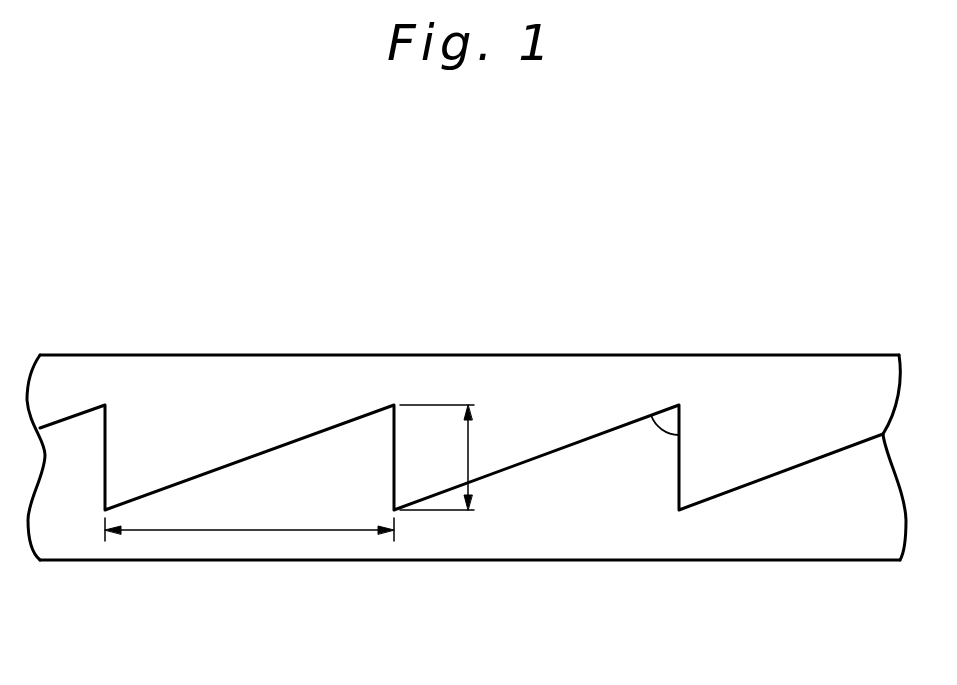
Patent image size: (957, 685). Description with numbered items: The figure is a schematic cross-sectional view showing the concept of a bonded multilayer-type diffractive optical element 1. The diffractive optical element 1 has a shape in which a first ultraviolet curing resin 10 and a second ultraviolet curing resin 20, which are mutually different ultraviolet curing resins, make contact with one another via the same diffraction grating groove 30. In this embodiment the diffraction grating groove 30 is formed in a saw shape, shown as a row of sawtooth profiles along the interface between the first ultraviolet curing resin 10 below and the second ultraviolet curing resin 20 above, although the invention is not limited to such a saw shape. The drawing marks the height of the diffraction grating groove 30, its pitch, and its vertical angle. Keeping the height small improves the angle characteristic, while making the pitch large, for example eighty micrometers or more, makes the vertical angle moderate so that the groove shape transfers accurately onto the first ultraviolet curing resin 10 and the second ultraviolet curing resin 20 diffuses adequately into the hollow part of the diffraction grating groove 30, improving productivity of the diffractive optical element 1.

The diffractive optical element 1 is at (466, 393).
The first ultraviolet curing resin 10 is at (610, 552).
The second ultraviolet curing resin 20 is at (586, 368).
The diffraction grating groove 30 is at (316, 431).